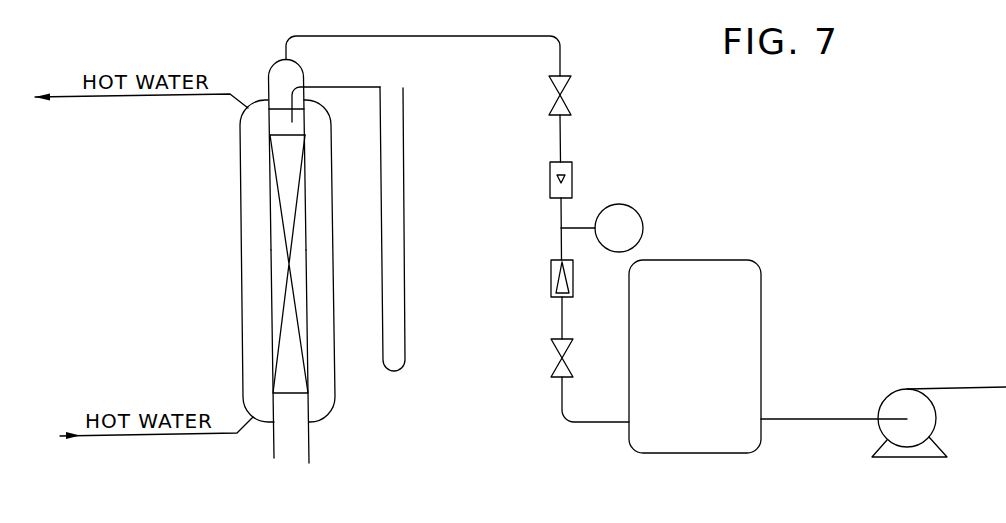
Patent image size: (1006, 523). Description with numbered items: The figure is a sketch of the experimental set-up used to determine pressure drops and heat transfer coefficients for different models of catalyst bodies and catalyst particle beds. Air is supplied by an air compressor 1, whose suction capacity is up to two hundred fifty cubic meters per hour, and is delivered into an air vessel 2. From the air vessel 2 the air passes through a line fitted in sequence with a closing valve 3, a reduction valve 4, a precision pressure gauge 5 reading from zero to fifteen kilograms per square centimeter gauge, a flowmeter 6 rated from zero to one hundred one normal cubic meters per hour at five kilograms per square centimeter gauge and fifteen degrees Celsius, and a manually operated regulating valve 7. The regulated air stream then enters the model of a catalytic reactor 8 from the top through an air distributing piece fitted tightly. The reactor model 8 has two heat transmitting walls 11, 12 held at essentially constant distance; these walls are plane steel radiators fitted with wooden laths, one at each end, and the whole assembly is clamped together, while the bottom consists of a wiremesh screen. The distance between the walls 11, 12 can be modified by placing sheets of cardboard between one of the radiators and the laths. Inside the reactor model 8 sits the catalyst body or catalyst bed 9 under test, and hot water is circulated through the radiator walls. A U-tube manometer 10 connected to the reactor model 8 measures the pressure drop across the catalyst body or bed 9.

The air compressor 1 is at (935, 429).
The air vessel 2 is at (762, 295).
The closing valve 3 is at (565, 358).
The reduction valve 4 is at (574, 283).
The precision pressure gauge 5 is at (643, 228).
The flowmeter 6 is at (573, 180).
The manually operated regulating valve 7 is at (562, 95).
The model of a catalytic reactor 8 is at (240, 223).
The catalyst body or catalyst bed 9 is at (287, 283).
The U-tube manometer 10 is at (405, 250).
The heat transmitting wall 11 is at (273, 438).
The heat transmitting wall 12 is at (310, 440).